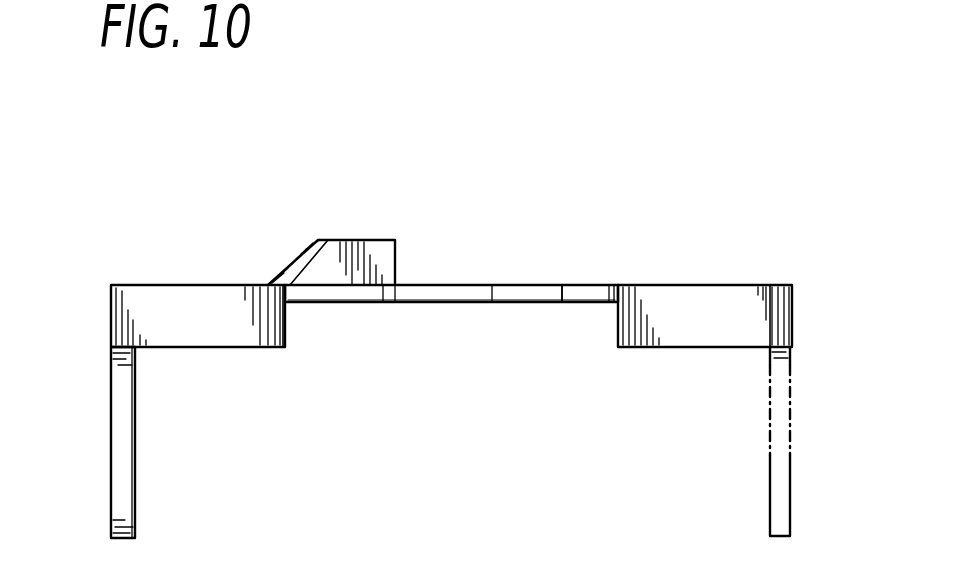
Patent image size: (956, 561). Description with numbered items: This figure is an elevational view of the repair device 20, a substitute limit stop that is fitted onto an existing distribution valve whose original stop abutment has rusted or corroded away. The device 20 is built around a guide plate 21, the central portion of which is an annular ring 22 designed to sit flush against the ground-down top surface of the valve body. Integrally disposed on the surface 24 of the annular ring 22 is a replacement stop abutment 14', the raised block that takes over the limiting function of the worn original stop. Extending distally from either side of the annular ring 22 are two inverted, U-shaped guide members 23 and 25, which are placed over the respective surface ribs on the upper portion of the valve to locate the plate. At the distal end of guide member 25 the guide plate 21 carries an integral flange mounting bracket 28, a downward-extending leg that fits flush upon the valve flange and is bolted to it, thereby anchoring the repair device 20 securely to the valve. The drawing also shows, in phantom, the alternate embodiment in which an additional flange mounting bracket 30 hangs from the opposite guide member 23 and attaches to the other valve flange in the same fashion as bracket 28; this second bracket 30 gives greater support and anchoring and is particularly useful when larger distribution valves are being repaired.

The repair device 20 is at (282, 196).
The replacement stop abutment 14' is at (367, 234).
The guide plate 21 is at (546, 305).
The annular ring 22 is at (584, 292).
The inverted U-shaped guide member 23 is at (703, 300).
The surface 24 is at (480, 284).
The inverted U-shaped guide member 25 is at (181, 292).
The flange mounting bracket 28 is at (121, 418).
The additional flange mounting bracket 30 is at (785, 447).